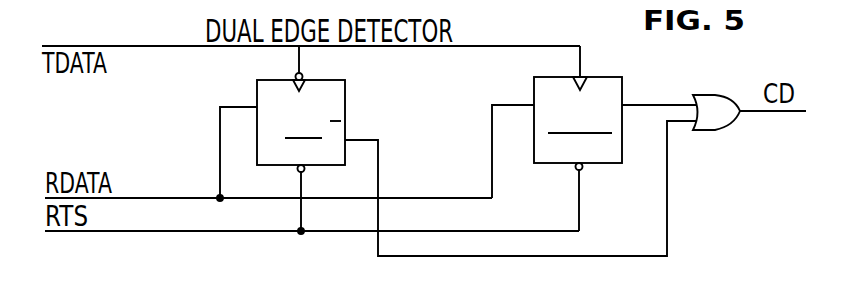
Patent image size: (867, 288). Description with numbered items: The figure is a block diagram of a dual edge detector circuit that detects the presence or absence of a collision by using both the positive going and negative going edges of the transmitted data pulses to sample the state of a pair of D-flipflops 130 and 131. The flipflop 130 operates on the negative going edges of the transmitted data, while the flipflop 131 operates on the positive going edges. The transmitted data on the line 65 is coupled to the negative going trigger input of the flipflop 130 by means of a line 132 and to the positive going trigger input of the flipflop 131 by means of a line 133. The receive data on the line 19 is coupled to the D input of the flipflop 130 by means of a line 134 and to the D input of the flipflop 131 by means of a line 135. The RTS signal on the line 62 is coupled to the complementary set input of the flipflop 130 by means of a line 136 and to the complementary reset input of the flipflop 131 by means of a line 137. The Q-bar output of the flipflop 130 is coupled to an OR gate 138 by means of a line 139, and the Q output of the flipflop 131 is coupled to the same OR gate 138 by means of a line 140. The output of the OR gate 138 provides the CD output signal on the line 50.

The line 19 is at (138, 198).
The line 50 is at (762, 113).
The line 62 is at (180, 233).
The line 65 is at (187, 48).
The D-flipflop 130 is at (345, 100).
The D-flipflop 131 is at (622, 88).
The line 132 is at (297, 61).
The line 133 is at (419, 47).
The line 134 is at (220, 151).
The line 135 is at (492, 168).
The line 136 is at (301, 211).
The line 137 is at (492, 230).
The OR gate 138 is at (706, 95).
The line 139 is at (667, 228).
The line 140 is at (673, 104).